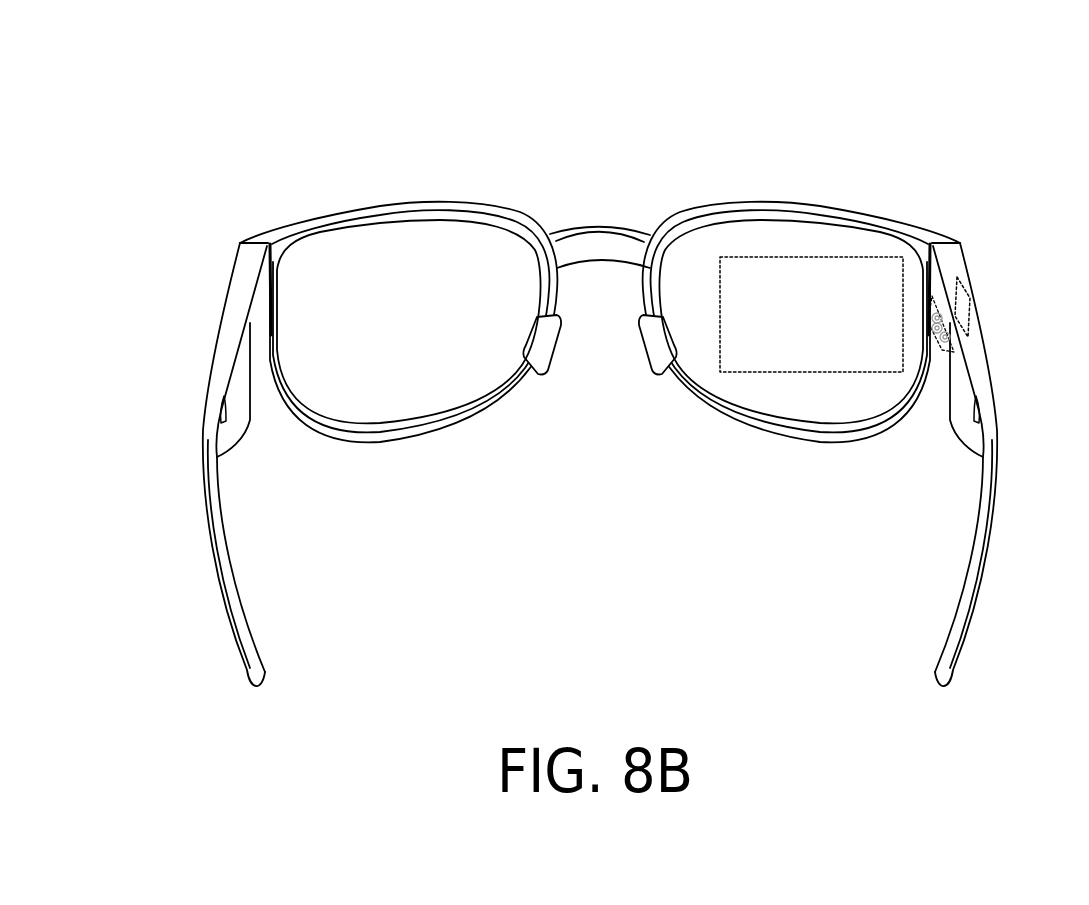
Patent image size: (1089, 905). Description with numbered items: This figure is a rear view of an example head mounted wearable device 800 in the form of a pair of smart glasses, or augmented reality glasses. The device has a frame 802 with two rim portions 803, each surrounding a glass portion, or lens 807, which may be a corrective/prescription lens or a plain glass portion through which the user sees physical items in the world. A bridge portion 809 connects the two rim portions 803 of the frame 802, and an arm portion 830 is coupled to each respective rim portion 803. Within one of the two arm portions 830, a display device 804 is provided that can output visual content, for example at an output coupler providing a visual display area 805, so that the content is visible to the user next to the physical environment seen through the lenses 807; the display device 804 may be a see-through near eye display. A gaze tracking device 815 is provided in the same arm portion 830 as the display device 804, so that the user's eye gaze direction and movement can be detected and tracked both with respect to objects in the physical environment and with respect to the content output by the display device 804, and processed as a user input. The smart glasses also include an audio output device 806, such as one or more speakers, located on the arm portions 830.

The head mounted wearable device 800 is at (285, 160).
The frame 802 is at (430, 203).
The rim portion 803 is at (418, 440).
The display device 804 is at (977, 293).
The visual display area 805 is at (717, 322).
The audio output device 806 is at (223, 420).
The lens 807 is at (348, 398).
The bridge portion 809 is at (613, 233).
The gaze tracking device 815 is at (930, 302).
The arm portion 830 is at (200, 427).